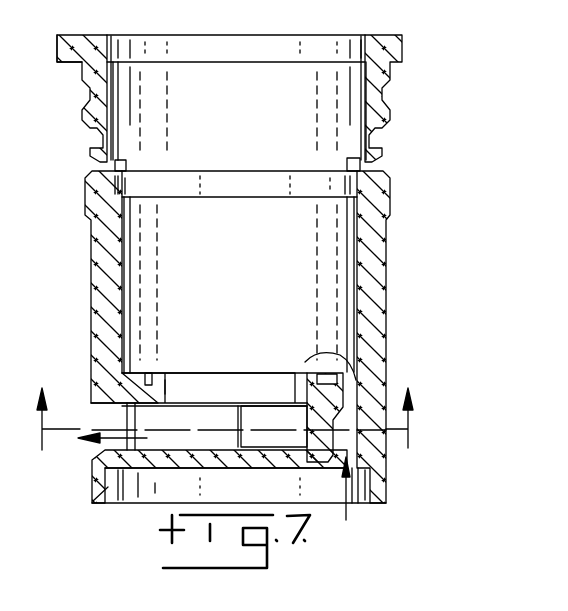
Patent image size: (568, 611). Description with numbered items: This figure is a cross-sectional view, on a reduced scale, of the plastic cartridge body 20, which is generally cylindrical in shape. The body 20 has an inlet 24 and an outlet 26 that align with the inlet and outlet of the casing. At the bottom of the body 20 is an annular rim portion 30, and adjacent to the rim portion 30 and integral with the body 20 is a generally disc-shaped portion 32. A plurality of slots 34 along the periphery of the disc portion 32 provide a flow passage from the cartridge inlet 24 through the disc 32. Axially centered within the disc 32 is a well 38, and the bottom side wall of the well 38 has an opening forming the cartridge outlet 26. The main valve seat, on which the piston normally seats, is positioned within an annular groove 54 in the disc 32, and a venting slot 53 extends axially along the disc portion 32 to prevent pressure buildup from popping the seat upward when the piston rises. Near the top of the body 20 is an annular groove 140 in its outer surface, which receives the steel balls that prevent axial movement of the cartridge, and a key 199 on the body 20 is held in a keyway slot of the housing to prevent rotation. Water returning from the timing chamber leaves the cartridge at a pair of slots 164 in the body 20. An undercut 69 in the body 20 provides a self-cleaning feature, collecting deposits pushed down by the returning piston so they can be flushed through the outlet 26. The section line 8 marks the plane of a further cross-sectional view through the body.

The key 199 is at (57, 41).
The annular groove 140 is at (88, 97).
The slots 164 is at (100, 165).
The cartridge body 20 is at (100, 273).
The annular groove 54 is at (151, 375).
The venting slot 53 is at (163, 387).
The well 38 is at (225, 383).
The disc-shaped portion 32 is at (301, 360).
The undercut 69 is at (306, 408).
The outlet 26 is at (147, 412).
The section line 8- 8 is at (222, 438).
The annular rim portion 30 is at (97, 497).
The inlet 24 is at (163, 492).
The slots 34 is at (353, 482).